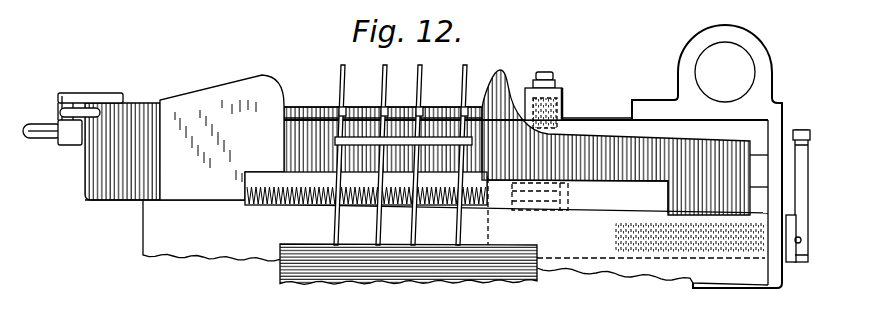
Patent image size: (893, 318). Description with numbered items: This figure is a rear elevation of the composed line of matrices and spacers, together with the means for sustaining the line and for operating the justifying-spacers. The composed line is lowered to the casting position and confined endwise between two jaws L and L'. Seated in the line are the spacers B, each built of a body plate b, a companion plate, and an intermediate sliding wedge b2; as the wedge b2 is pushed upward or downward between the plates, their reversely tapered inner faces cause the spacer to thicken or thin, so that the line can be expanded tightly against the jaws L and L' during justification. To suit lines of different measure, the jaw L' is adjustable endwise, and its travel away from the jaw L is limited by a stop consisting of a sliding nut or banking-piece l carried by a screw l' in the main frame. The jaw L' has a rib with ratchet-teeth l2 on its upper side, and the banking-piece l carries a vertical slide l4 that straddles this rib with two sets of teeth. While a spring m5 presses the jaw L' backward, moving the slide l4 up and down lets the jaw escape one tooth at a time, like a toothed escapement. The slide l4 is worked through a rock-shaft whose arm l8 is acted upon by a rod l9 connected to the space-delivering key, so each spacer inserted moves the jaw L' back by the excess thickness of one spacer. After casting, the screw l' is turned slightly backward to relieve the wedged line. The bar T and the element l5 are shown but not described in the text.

The arm l8 is at (58, 96).
The rod l9 is at (60, 112).
The jaw L is at (222, 137).
The spacers B is at (340, 77).
The plate b is at (339, 107).
The sliding wedge b2 is at (378, 223).
The spring m5 is at (366, 200).
The matrix-confining jaw L' is at (616, 131).
The vertical slide l4 is at (562, 93).
The ratchet-teeth l2 is at (566, 150).
The slide l5 is at (583, 175).
The bar T is at (512, 280).
The banking-piece l is at (690, 270).
The screw l' is at (651, 286).